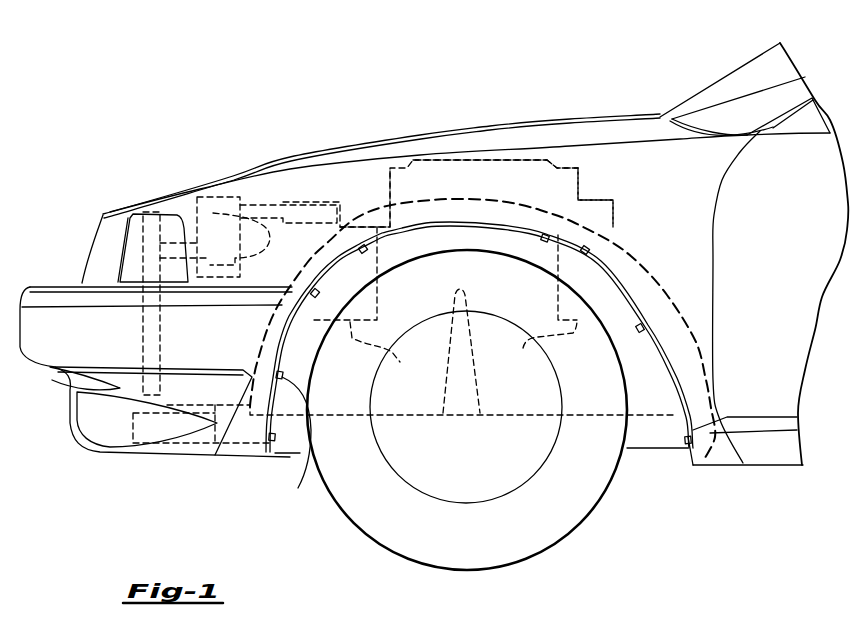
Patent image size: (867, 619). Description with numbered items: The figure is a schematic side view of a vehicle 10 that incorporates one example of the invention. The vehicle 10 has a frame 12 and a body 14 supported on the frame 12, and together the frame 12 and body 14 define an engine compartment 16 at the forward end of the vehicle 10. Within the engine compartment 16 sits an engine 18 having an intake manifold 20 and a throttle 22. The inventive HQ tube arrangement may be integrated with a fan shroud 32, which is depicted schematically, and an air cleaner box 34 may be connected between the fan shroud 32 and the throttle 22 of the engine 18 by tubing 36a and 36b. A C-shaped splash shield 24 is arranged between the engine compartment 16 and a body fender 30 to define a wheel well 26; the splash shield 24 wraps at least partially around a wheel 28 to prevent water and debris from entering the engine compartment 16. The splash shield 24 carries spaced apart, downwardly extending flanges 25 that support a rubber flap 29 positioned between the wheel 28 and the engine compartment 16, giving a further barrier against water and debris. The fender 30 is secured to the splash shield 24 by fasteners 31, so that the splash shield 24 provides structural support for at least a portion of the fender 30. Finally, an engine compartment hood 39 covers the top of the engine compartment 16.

The vehicle 10 is at (518, 52).
The frame 12 is at (643, 440).
The body 14 is at (588, 129).
The engine compartment 16 is at (598, 185).
The engine 18 is at (615, 227).
The intake manifold 20 is at (403, 162).
The throttle 22 is at (358, 225).
The splash shield 24 is at (263, 350).
The flanges 25 is at (463, 356).
The wheel well 26 is at (454, 228).
The wheel 28 is at (557, 523).
The rubber flap 29 is at (433, 400).
The body fender 30 is at (565, 157).
The fasteners 31 is at (643, 328).
The fan shroud 32 is at (143, 257).
The air cleaner box 34 is at (182, 210).
The tubing 36a is at (243, 197).
The tubing 36b is at (277, 200).
The engine compartment hood 39 is at (387, 138).